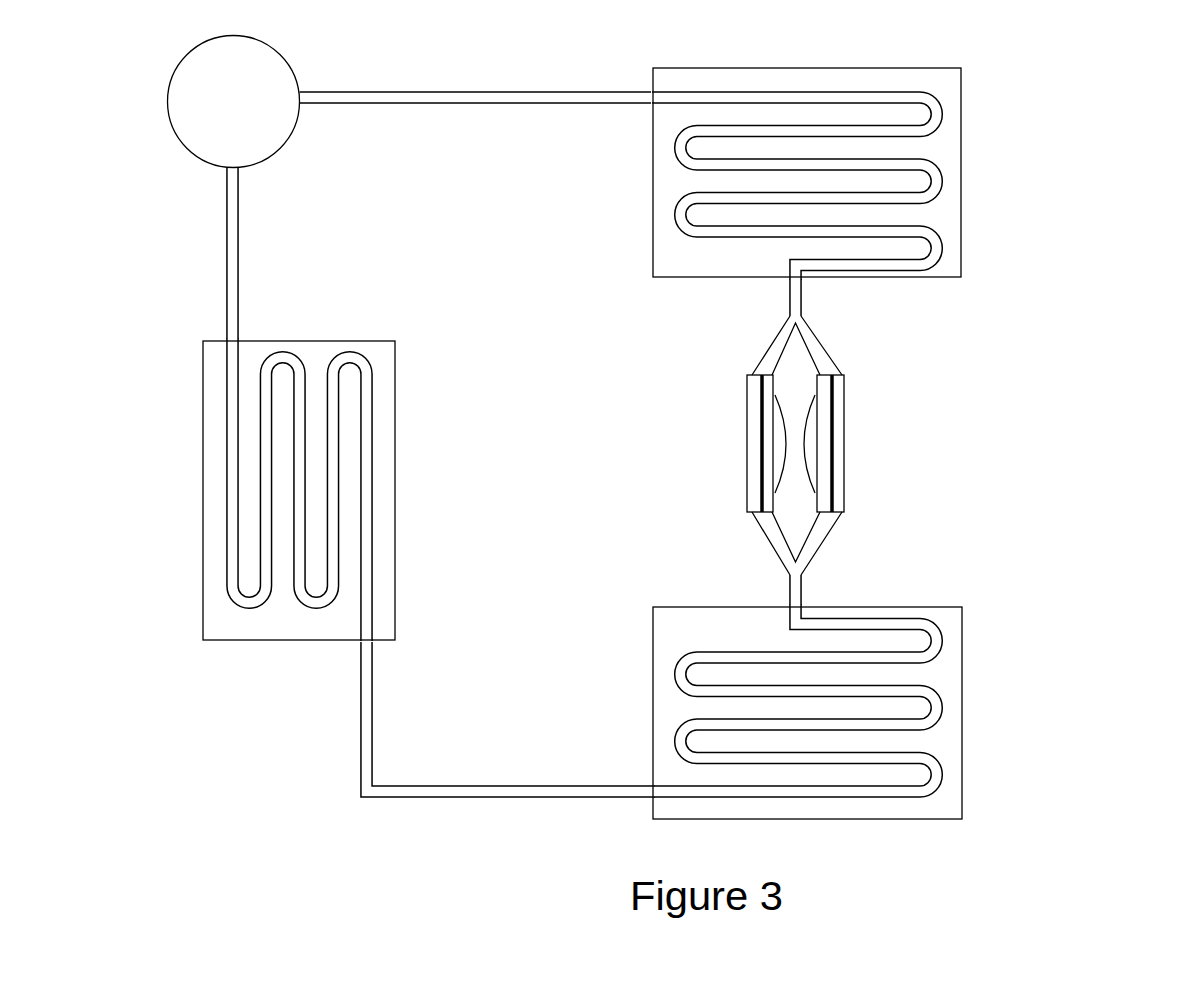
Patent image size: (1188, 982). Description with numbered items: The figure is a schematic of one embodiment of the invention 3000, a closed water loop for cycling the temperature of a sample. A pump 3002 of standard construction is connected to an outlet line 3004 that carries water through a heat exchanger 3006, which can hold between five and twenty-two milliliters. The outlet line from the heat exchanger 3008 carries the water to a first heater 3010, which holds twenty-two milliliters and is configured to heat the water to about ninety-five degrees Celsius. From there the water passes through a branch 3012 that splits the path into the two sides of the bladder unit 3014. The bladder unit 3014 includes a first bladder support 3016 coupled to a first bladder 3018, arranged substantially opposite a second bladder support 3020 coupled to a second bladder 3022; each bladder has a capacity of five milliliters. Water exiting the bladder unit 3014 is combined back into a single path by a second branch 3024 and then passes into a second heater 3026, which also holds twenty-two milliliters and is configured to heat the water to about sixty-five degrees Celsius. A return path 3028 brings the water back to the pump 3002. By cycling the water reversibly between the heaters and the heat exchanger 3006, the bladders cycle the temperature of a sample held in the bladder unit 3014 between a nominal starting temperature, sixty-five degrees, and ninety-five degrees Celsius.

The embodiment of the invention 3000 is at (669, 421).
The pump 3002 is at (280, 51).
The outlet line 3004 is at (242, 272).
The heat exchanger 3006 is at (402, 420).
The outlet line from the heat exchanger 3008 is at (422, 745).
The first heater 3010 is at (965, 676).
The branch 3012 is at (813, 572).
The bladder unit 3014 is at (830, 445).
The first bladder support 3016 is at (743, 440).
The first bladder 3018 is at (775, 395).
The second bladder support 3020 is at (847, 440).
The second bladder 3022 is at (811, 395).
The second branch 3024 is at (805, 312).
The second heater 3026 is at (963, 110).
The return path 3028 is at (450, 90).